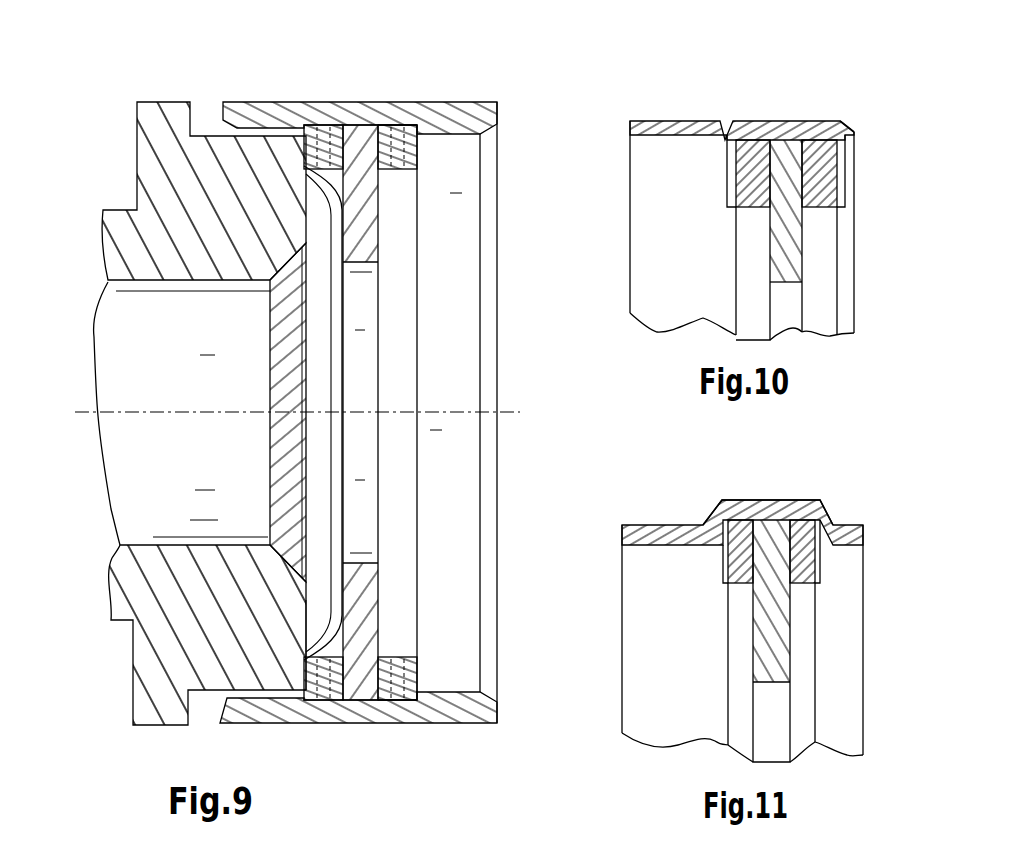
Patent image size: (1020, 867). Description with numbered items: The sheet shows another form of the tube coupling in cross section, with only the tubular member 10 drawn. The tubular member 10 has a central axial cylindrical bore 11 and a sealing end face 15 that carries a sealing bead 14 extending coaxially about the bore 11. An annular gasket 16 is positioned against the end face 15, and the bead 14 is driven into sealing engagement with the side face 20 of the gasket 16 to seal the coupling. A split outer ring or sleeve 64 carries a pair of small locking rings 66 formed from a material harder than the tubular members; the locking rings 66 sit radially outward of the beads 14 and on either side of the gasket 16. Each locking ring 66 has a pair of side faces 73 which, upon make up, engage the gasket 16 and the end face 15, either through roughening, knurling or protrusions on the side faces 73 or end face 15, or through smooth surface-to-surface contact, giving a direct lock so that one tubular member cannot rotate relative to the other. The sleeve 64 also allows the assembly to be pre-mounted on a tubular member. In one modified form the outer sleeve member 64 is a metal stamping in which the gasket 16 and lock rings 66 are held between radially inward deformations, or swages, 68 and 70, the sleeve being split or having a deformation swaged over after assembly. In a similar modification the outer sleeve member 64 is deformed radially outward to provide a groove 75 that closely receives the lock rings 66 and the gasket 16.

In FIG. 9, the tubular member 10 is at (122, 622).
In FIG. 9, the central axial cylindrical bore 11 is at (150, 540).
In FIG. 9, the sealing bead 14 is at (331, 250).
In FIG. 9, the sealing end face 15 is at (320, 700).
In FIG. 9, the annular gasket 16 is at (362, 242).
In FIG. 10, the annular gasket 16 is at (802, 252).
In FIG. 11, the annular gasket 16 is at (790, 642).
In FIG. 9, the side face of the gasket 20 is at (380, 195).
In FIG. 9, the outer sleeve 64 is at (440, 724).
In FIG. 10, the outer sleeve 64 is at (665, 123).
In FIG. 11, the outer sleeve 64 is at (672, 525).
In FIG. 9, the locking ring 66 is at (325, 140).
In FIG. 10, the locking ring 66 is at (758, 150).
In FIG. 11, the locking ring 66 is at (740, 525).
In FIG. 10, the deformation or swage 68 is at (728, 140).
In FIG. 10, the deformation or swage 70 is at (854, 125).
In FIG. 9, the side face of the locking ring 73 is at (360, 421).
In FIG. 11, the groove 75 is at (733, 500).